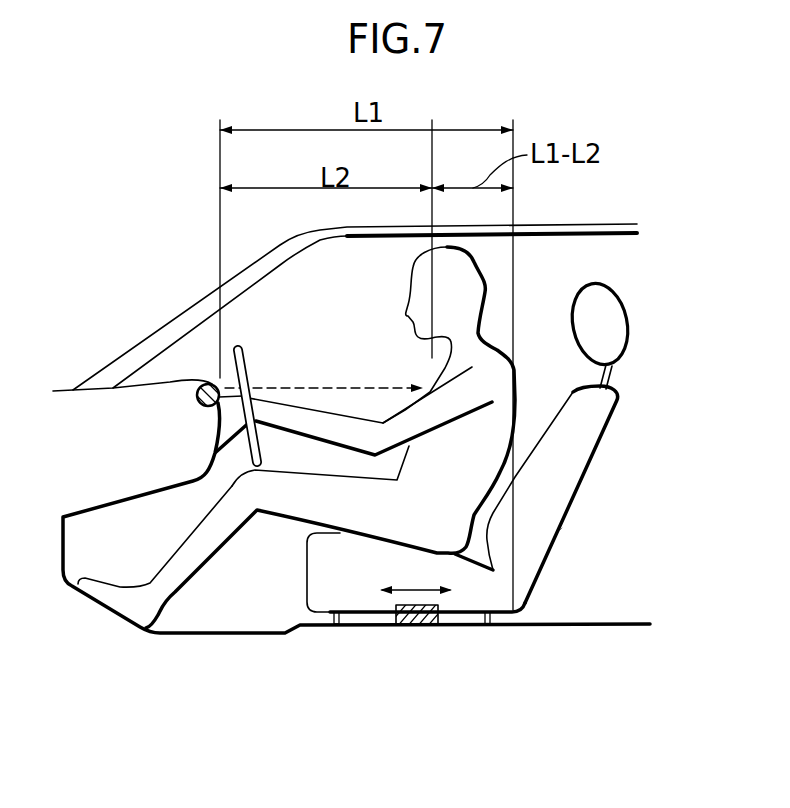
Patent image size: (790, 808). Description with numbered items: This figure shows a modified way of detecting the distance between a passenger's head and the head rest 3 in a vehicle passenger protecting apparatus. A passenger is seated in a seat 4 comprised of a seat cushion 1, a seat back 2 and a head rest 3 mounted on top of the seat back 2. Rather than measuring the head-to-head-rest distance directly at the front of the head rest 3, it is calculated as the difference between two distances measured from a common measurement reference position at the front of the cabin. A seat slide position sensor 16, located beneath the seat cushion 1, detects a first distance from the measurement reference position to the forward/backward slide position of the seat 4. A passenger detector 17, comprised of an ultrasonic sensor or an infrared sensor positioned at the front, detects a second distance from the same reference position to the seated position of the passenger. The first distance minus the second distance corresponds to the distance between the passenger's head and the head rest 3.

The seat cushion 1 is at (330, 598).
The seat back 2 is at (565, 528).
The head rest 3 is at (628, 313).
The seat 4 is at (592, 491).
The seat slide position sensor 16 is at (433, 627).
The passenger detector 17 is at (198, 414).